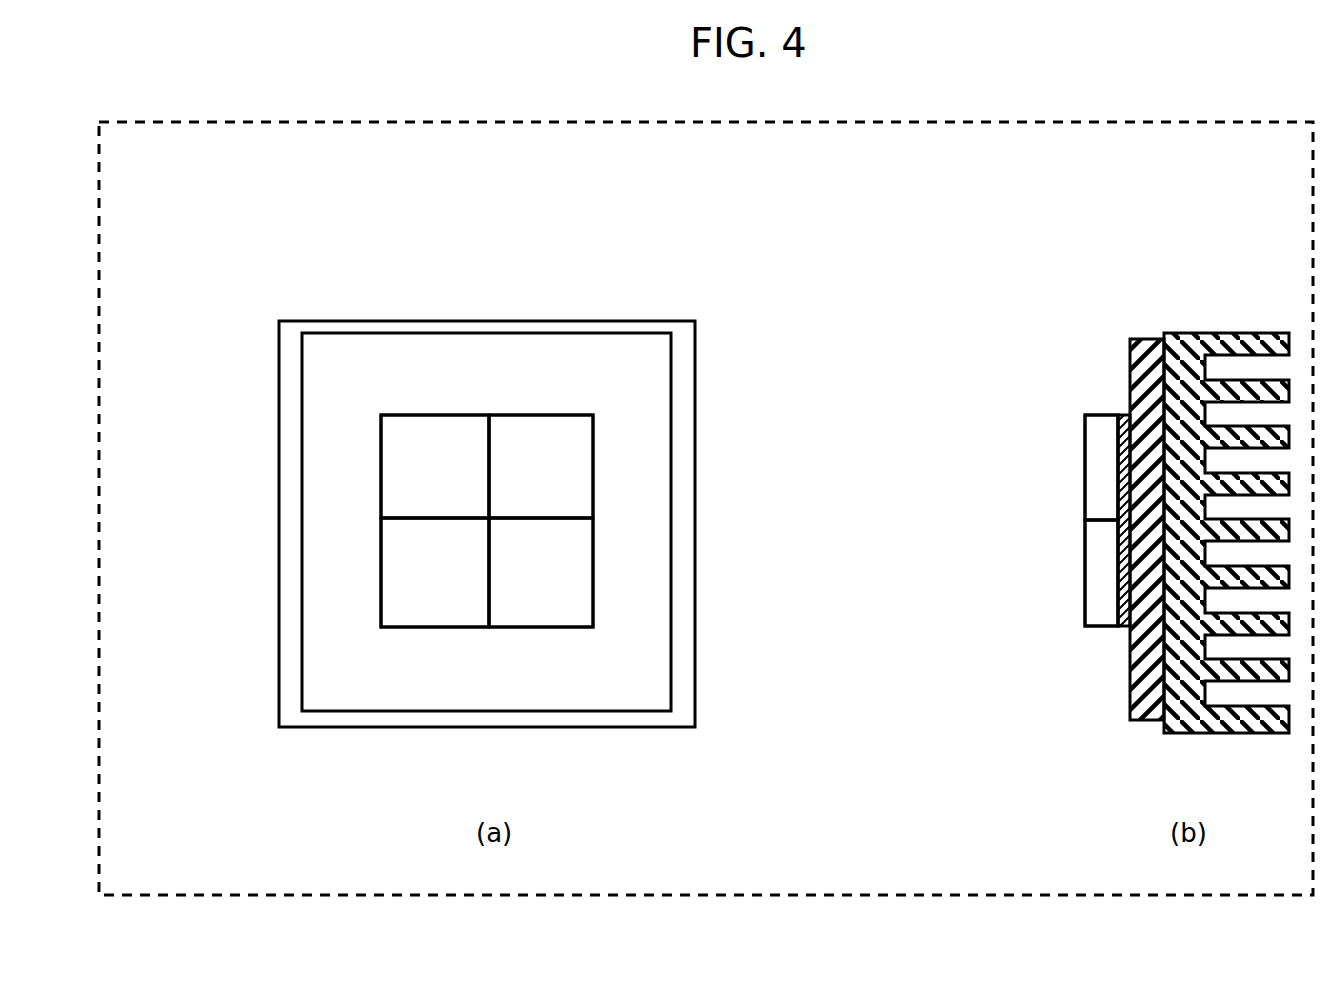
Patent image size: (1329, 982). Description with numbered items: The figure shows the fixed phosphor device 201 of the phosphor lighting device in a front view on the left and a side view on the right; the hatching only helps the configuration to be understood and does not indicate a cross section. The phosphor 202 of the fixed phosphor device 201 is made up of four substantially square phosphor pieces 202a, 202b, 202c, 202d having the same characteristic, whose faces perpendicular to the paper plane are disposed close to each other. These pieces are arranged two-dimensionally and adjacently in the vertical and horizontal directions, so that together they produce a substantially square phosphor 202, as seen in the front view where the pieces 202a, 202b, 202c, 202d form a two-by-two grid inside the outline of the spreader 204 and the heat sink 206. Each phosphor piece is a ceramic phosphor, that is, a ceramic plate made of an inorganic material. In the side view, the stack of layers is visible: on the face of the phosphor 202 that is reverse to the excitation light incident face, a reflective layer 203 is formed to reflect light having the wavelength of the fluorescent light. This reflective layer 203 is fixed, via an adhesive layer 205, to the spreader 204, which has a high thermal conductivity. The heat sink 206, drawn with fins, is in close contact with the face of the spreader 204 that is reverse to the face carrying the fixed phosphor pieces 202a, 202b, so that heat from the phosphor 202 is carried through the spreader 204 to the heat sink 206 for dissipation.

The fixed phosphor device 201 is at (382, 273).
The phosphor 202 is at (593, 440).
The phosphor piece 202a is at (577, 470).
The phosphor piece 202b is at (577, 590).
The phosphor piece 202c is at (400, 460).
The phosphor piece 202d is at (400, 583).
The reflective layer 203 is at (1121, 414).
The spreader 204 is at (555, 331).
The adhesive layer 205 is at (1129, 627).
The heat sink 206 is at (678, 320).